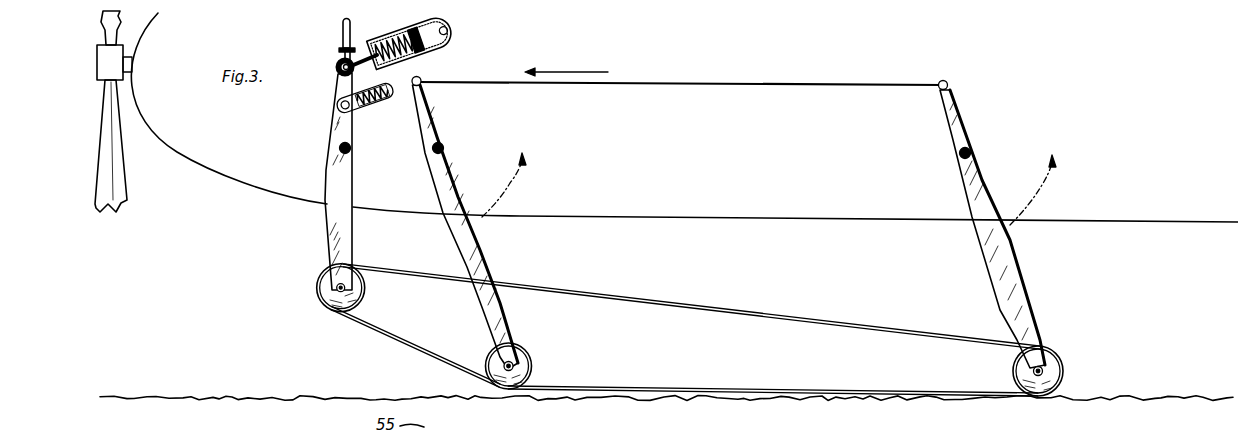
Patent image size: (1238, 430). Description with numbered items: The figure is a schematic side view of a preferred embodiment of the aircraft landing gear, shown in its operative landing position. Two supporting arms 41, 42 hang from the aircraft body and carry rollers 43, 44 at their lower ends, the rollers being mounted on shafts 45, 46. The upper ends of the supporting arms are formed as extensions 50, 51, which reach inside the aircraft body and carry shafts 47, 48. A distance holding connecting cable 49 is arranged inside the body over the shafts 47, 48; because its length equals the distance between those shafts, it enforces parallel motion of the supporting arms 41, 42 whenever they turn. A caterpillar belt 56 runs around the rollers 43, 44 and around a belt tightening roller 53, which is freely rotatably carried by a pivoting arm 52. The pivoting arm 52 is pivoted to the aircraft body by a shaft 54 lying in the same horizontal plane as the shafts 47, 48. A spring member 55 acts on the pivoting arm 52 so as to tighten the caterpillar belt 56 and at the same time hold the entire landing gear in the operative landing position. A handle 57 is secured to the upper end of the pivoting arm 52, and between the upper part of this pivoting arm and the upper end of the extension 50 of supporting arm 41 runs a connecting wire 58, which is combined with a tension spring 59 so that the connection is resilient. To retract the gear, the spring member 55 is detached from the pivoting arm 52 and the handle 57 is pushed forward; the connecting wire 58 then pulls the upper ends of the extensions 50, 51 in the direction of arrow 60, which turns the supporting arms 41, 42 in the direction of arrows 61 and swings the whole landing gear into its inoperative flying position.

The supporting arm 41 is at (478, 258).
The supporting arm 42 is at (1010, 270).
The roller 43 is at (528, 348).
The roller 44 is at (1056, 350).
The shaft 45 is at (526, 368).
The shaft 46 is at (1052, 376).
The shaft 47 is at (446, 150).
The shaft 48 is at (973, 151).
The distance holding connecting cable 49 is at (663, 83).
The extension of supporting arm 50 is at (432, 106).
The extension of supporting arm 51 is at (956, 118).
The pivoting arm 52 is at (346, 240).
The belt tightening roller 53 is at (362, 294).
The shaft 54 is at (352, 151).
The spring member 55 is at (436, 50).
The caterpillar belt 56 is at (712, 306).
The handle 57 is at (340, 25).
The connecting wire 58 is at (408, 92).
The tension spring 59 is at (343, 100).
The arrow 60 is at (566, 65).
The arrows 61 is at (778, 189).